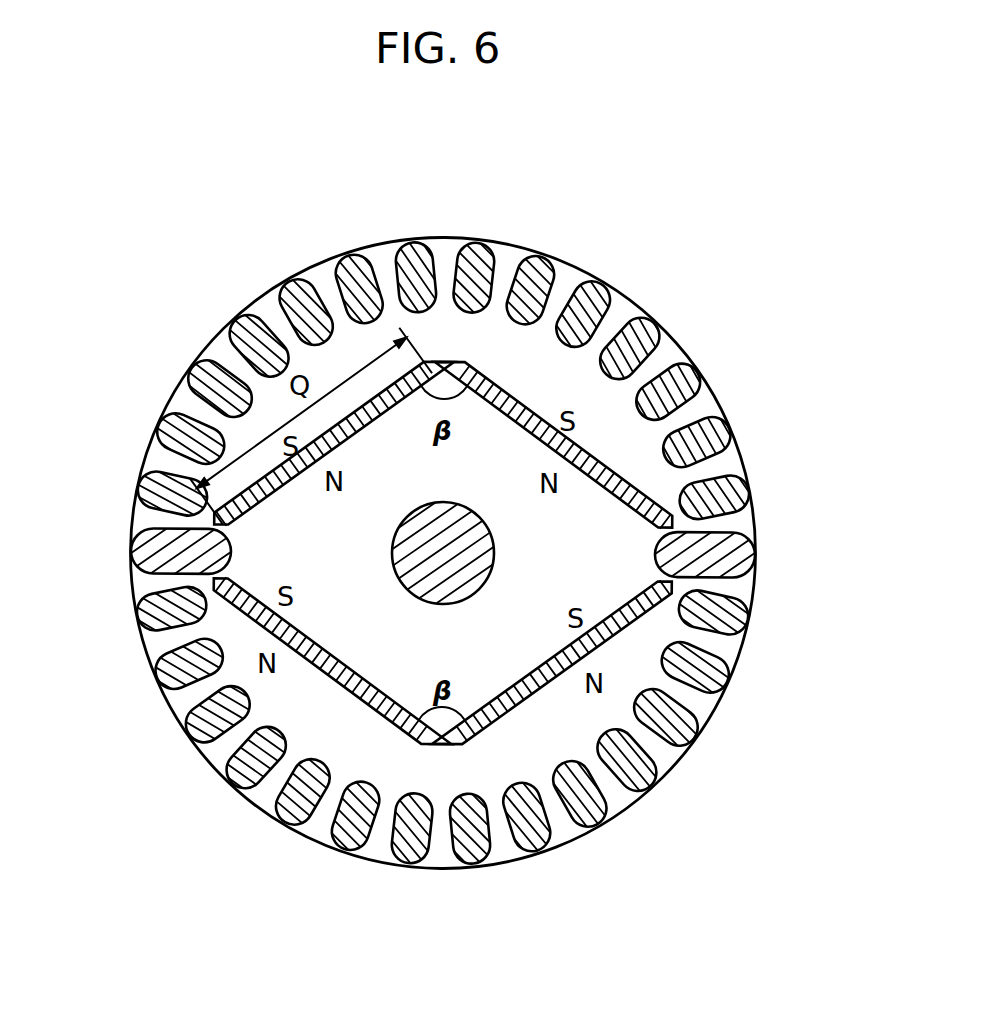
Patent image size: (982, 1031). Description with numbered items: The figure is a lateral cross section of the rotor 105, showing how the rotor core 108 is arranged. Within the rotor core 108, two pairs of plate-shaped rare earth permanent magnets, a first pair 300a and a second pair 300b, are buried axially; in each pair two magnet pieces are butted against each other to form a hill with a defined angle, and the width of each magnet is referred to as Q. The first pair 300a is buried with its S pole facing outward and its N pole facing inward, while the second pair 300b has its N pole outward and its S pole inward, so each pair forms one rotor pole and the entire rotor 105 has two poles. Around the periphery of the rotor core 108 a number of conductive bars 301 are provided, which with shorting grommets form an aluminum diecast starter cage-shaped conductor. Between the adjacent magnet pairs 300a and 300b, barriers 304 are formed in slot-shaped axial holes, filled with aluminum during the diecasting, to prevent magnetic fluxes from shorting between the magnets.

The rotor 105 is at (263, 292).
The rotor core 108 is at (488, 325).
The first pair of permanent magnets 300a is at (283, 470).
The second pair of permanent magnets 300b is at (335, 662).
The conductive bars 301 is at (725, 495).
The barriers 304 is at (153, 550).